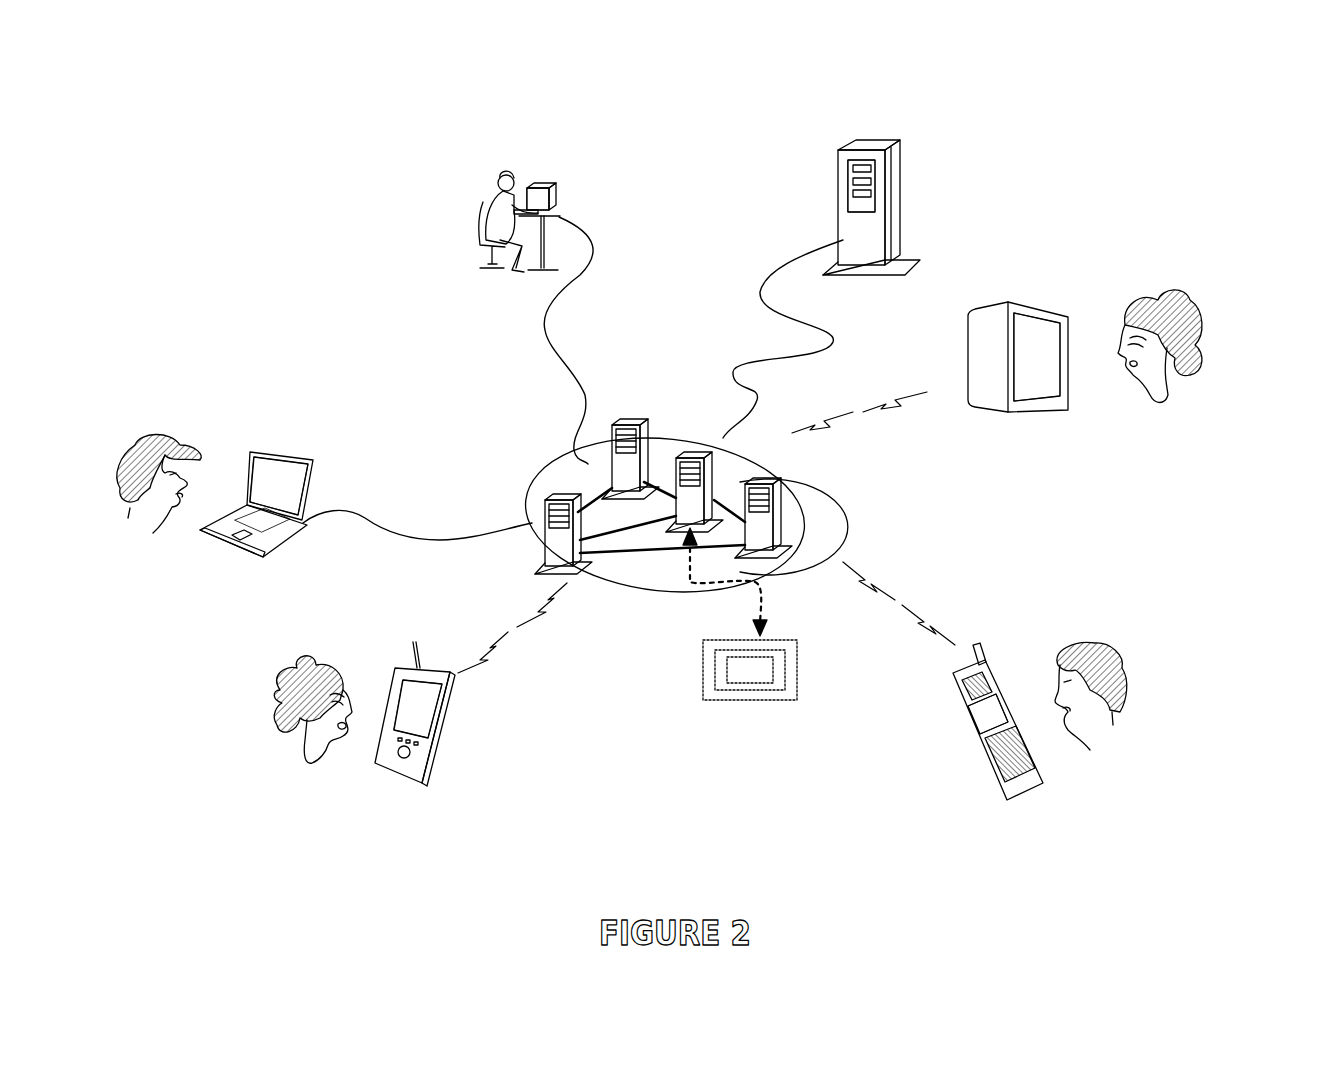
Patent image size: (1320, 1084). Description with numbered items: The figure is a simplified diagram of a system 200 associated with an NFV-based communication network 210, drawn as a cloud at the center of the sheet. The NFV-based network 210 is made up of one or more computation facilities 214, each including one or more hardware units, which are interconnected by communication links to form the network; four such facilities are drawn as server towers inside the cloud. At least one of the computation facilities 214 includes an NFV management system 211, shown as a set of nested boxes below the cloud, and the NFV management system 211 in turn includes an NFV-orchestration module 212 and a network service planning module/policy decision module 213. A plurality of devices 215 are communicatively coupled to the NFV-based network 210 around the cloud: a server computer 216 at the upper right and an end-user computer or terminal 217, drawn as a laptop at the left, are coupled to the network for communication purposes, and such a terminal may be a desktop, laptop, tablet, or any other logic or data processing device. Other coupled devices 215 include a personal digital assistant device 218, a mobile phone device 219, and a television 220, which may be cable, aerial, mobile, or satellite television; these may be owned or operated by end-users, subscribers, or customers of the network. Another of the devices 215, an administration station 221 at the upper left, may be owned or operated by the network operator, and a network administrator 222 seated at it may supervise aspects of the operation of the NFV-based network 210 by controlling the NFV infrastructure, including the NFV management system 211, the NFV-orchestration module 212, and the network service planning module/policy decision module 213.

The system 200 is at (1226, 138).
The NFV-based communication network 210 is at (720, 440).
The NFV management system 211 is at (703, 650).
The NFV-orchestration (NFV-O) module 212 is at (715, 668).
The network service planning module/policy decision module 213 is at (727, 680).
The computation facilities 214 is at (628, 420).
The devices 215 is at (900, 178).
The server computer 216 is at (890, 192).
The computer or terminal 217 is at (312, 486).
The personal digital assistant (PDA) device 218 is at (440, 752).
The mobile phone device 219 is at (988, 775).
The television 220 is at (968, 370).
The administration station 221 is at (560, 220).
The network administrator 222 is at (478, 195).